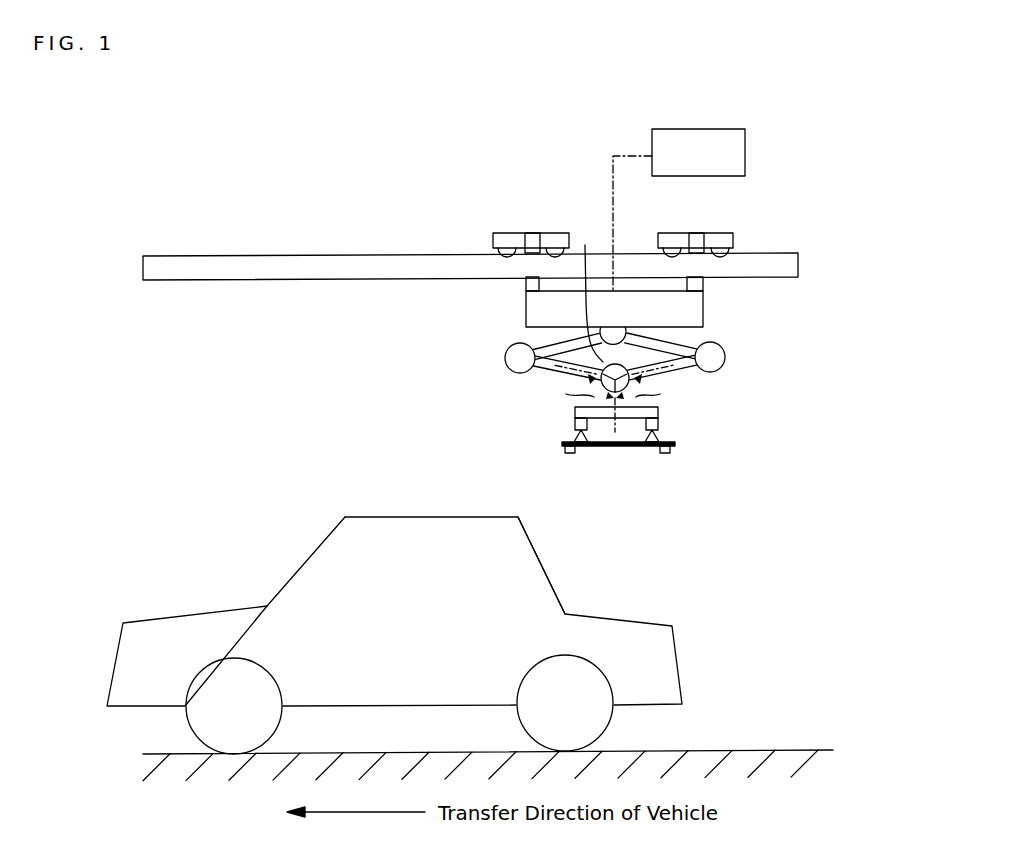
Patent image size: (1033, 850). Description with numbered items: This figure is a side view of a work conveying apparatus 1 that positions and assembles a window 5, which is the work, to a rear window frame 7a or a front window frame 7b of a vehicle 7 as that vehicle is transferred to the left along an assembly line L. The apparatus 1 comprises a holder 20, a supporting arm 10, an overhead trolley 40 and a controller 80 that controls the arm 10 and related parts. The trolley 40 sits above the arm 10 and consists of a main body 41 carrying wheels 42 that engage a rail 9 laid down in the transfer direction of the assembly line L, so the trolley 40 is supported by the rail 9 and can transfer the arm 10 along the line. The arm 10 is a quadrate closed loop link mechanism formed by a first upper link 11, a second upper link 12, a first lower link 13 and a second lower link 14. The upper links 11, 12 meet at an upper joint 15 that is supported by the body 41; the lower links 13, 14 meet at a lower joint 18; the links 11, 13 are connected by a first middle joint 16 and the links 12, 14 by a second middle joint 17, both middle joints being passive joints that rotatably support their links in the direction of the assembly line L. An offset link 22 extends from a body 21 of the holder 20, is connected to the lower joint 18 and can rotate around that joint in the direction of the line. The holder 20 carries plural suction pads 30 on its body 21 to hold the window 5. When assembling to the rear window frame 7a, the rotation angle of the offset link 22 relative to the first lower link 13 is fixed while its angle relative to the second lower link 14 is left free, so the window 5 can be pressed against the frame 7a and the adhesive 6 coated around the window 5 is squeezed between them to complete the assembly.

The work conveying apparatus 1 is at (405, 343).
The window 5 is at (617, 450).
The adhesive 6 is at (565, 452).
The vehicle 7 is at (365, 517).
The rear window frame 7a is at (545, 562).
The front window frame 7b is at (303, 560).
The rail 9 is at (321, 256).
The supporting arm 10 is at (730, 387).
The first upper link 11 is at (553, 348).
The second upper link 12 is at (667, 342).
The first lower link 13 is at (552, 372).
The second lower link 14 is at (683, 372).
The upper joint 15 is at (618, 322).
The first middle joint 16 is at (517, 360).
The second middle joint 17 is at (712, 360).
The lower joint 18 is at (588, 290).
The holder 20 is at (666, 414).
The body of the holder 21 is at (580, 412).
The offset link 22 is at (627, 409).
The suction pads 30 is at (575, 437).
The overhead trolley 40 is at (515, 303).
The main body 41 is at (700, 299).
The wheels 42 is at (505, 248).
The controller 80 is at (745, 154).
The assembly line L is at (742, 750).